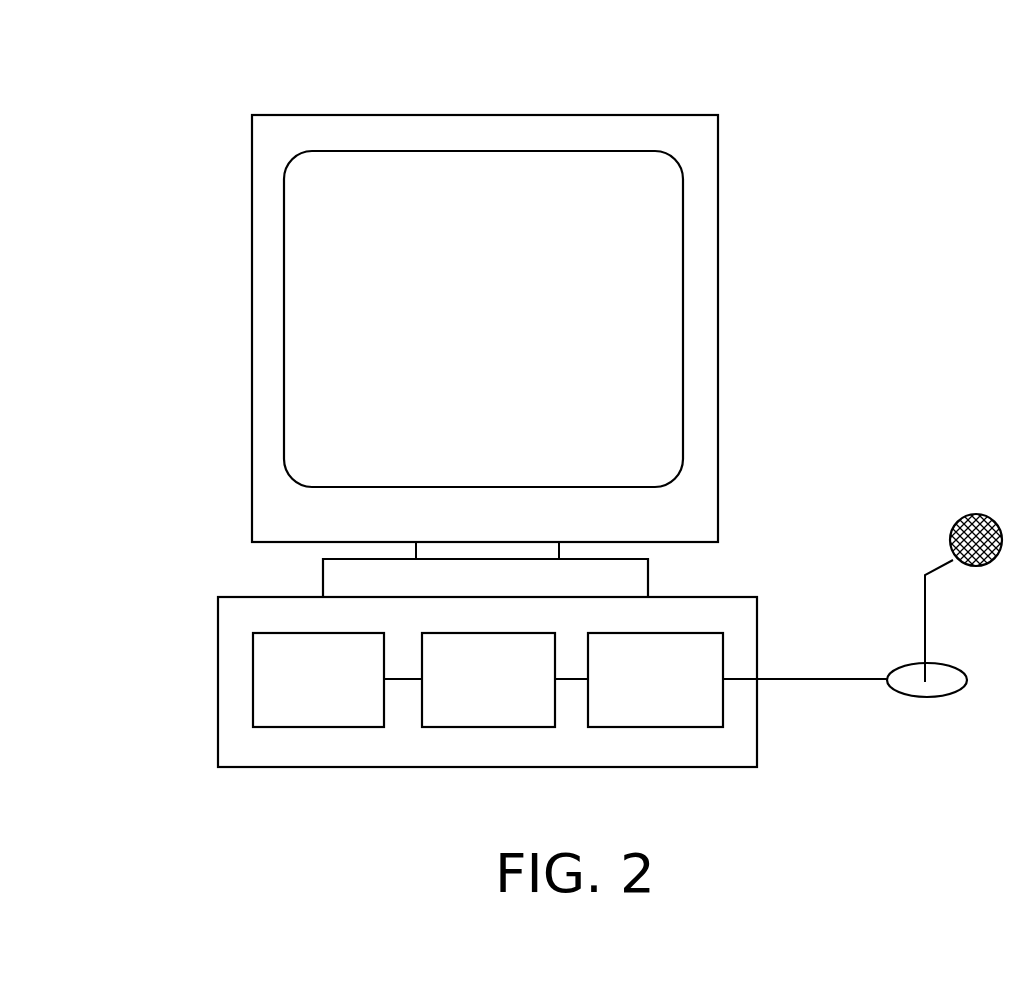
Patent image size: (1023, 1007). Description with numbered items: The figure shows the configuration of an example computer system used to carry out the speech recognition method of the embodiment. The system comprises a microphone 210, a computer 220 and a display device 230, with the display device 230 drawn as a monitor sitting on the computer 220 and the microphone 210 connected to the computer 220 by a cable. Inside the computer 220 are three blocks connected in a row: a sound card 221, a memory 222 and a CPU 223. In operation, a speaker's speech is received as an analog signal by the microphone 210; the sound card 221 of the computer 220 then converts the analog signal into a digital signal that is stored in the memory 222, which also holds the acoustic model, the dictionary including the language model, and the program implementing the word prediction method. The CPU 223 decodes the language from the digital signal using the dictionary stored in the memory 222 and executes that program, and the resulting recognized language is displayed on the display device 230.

The microphone 210 is at (972, 513).
The computer 220 is at (532, 742).
The sound card 221 is at (655, 681).
The memory 222 is at (488, 681).
The CPU 223 is at (318, 681).
The display device 230 is at (325, 80).